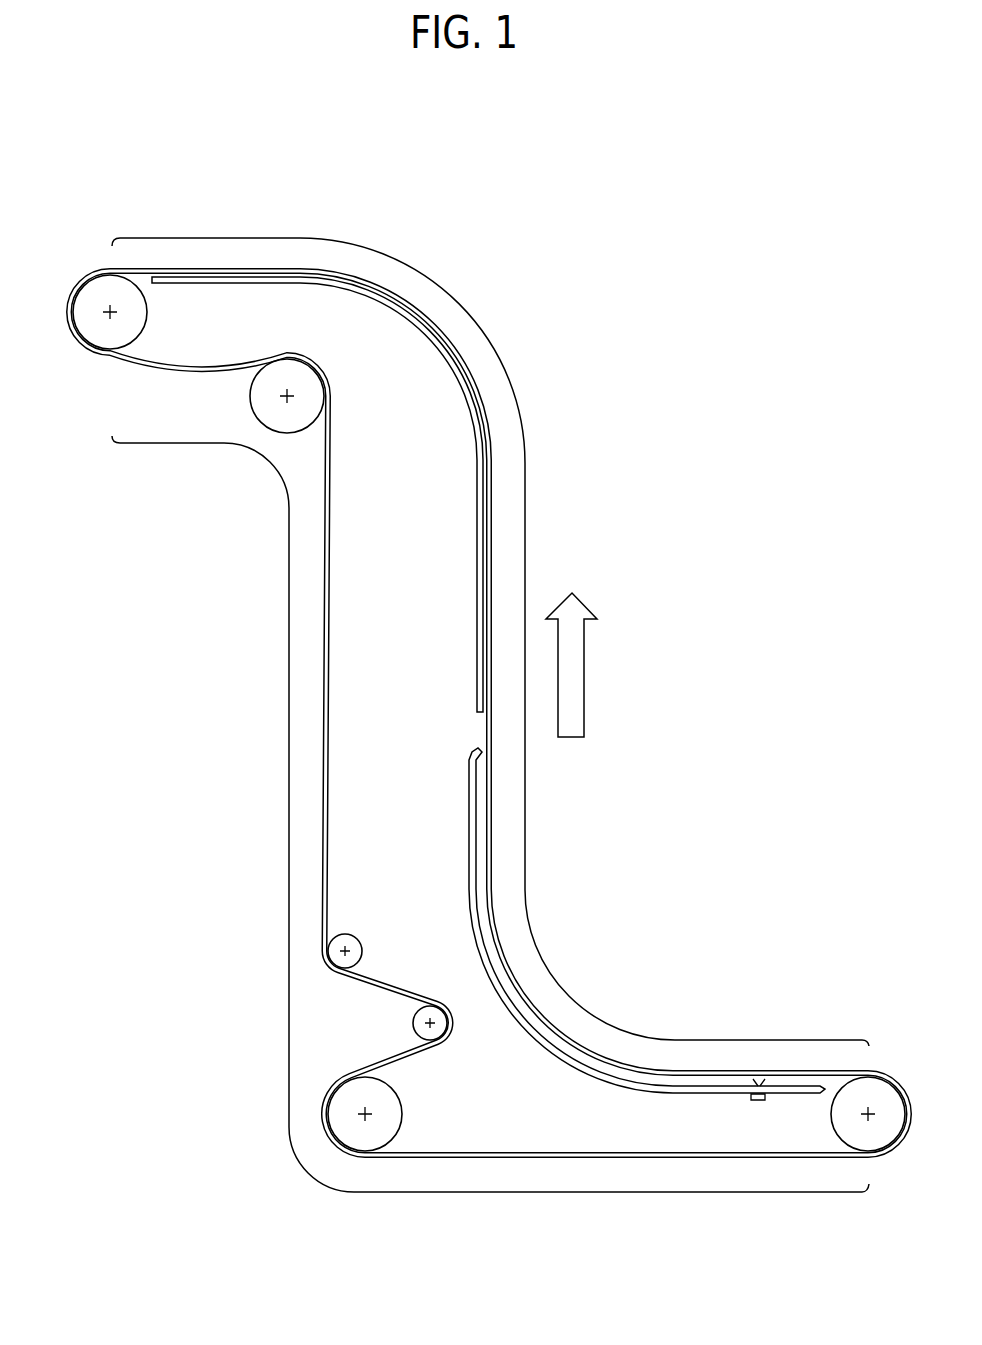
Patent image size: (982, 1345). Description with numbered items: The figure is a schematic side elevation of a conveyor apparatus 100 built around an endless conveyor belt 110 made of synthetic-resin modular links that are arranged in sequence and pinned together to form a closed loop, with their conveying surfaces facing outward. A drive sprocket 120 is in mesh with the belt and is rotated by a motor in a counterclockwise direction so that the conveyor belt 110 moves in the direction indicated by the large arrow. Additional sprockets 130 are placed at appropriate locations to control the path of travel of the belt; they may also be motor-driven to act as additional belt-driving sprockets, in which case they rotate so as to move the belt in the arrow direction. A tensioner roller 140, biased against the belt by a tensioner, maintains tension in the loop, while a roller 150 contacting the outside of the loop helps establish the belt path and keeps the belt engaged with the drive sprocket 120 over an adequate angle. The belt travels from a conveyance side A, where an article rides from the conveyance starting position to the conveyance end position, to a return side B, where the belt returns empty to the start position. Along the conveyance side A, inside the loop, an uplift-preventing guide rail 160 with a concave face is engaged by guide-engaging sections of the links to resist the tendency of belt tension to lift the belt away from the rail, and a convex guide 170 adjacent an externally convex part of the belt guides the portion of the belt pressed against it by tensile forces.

The conveyor apparatus 100 is at (91, 139).
The endless conveyor belt 110 is at (493, 518).
The drive sprocket 120 is at (147, 314).
The sprockets 130 is at (352, 934).
The tensioner roller 140 is at (414, 1014).
The roller 150 is at (250, 393).
The uplift-preventing guide rail 160 is at (583, 1070).
The convex guide 170 is at (456, 370).
The conveyance side A is at (492, 341).
The return side B is at (289, 784).